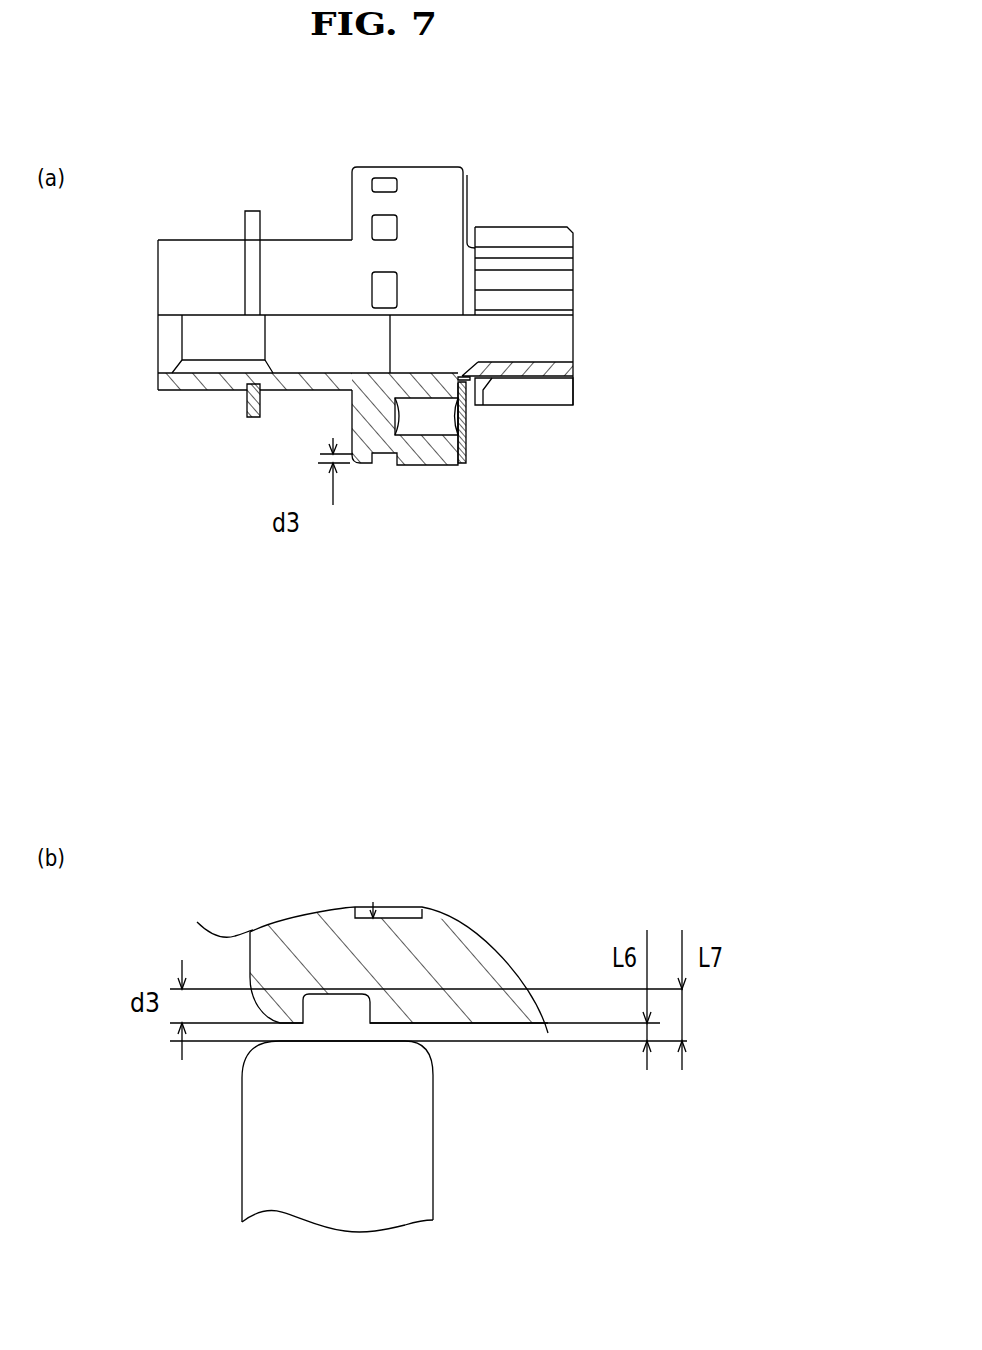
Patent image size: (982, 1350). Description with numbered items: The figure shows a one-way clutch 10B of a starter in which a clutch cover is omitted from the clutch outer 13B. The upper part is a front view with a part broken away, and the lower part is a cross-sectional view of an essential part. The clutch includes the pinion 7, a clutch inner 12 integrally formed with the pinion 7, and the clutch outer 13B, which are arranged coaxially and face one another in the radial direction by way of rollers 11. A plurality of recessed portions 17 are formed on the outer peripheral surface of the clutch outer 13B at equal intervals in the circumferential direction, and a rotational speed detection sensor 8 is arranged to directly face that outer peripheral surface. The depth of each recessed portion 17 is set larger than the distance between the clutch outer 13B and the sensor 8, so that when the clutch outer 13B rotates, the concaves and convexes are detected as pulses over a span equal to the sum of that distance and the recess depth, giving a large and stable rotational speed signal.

The one-way clutch 10B is at (215, 132).
The pinion 7 is at (533, 235).
The clutch inner 12 is at (412, 375).
The clutch outer 13B is at (358, 402).
The rollers 11 is at (437, 421).
The recessed portion 17 is at (383, 185).
The rotational speed detection sensor 8 is at (420, 1203).